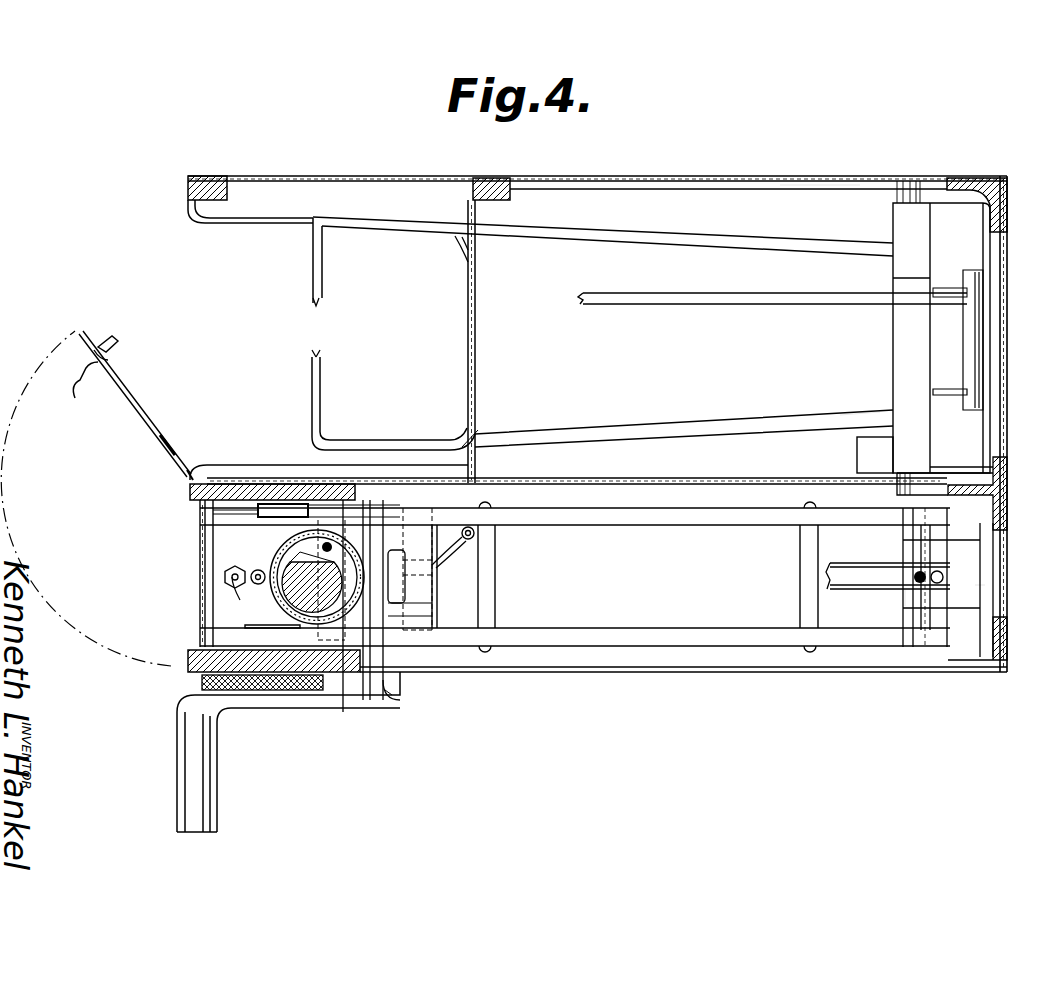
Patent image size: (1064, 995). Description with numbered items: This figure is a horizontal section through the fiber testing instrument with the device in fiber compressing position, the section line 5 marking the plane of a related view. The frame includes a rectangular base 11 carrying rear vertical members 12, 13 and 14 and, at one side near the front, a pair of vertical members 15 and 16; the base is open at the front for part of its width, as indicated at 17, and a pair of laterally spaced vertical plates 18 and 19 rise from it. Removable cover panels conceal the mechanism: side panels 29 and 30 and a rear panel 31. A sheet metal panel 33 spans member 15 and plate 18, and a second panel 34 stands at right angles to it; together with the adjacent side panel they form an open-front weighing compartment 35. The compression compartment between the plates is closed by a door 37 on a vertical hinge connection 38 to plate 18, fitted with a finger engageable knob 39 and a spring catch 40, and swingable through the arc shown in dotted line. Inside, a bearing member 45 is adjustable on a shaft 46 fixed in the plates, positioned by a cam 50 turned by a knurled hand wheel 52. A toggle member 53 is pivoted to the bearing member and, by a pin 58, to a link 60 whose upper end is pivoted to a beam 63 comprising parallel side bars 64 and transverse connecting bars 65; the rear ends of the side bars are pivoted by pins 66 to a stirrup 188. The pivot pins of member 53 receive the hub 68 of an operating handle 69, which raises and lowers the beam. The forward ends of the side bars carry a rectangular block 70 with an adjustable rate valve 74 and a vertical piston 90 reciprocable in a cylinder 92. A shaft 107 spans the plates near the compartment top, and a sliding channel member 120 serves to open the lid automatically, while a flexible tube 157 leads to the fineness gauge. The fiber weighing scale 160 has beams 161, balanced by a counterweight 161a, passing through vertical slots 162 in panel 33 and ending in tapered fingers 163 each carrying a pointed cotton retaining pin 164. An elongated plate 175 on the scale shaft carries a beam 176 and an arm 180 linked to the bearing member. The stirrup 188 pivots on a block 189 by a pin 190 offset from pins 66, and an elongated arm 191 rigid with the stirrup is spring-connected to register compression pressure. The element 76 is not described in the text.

The rectangular base 11 is at (695, 186).
The vertical member 12 is at (990, 670).
The vertical member 13 is at (1000, 488).
The vertical member 14 is at (1000, 188).
The vertical member 15 is at (492, 180).
The vertical member 16 is at (228, 178).
The front opening of base 17 is at (195, 288).
The vertical plate 18 is at (262, 487).
The vertical plate 19 is at (355, 616).
The side panel 29 is at (775, 180).
The side panel 30 is at (592, 674).
The rear panel 31 is at (1008, 378).
The sheet metal panel 33 is at (480, 382).
The sheet metal panel 34 is at (405, 508).
The weighing compartment 35 is at (410, 356).
The door 37 is at (140, 430).
The hinge connection 38 is at (190, 474).
The knob 39 is at (118, 350).
The spring catch 40 is at (76, 400).
The bearing member 45 is at (290, 610).
The shaft 46 is at (400, 534).
The cam 50 is at (200, 640).
The knurled hand wheel 52 is at (262, 693).
The toggle member 53 is at (405, 590).
The pivot pin 58 is at (395, 700).
The link 60 is at (425, 620).
The beam 63 is at (581, 537).
The side bars 64 is at (740, 525).
The transverse connecting bars 65 is at (490, 602).
The pins 66 is at (930, 648).
The hub 68 is at (402, 694).
The operating handle 69 is at (190, 737).
The rectangular block 70 is at (246, 548).
The adjustable rate valve 74 is at (255, 610).
The pin 76 is at (258, 570).
The piston 90 is at (288, 545).
The cylinder 92 is at (274, 592).
The shaft 107 is at (205, 596).
The channel member 120 is at (380, 498).
The flexible tube 157 is at (465, 527).
The fiber weighing scale 160 is at (848, 407).
The scale beams 161 is at (606, 244).
The counterweight 161a is at (975, 340).
The vertical slots 162 is at (480, 240).
The fingers 163 is at (320, 276).
The cotton retaining pin 164 is at (313, 303).
The elongated plate 175 is at (893, 342).
The beam 176 is at (695, 304).
The arm 180 is at (735, 475).
The stirrup 188 is at (950, 532).
The block 189 is at (970, 590).
The pin 190 is at (915, 598).
The arm 191 is at (837, 565).
The section line 5 is at (170, 597).